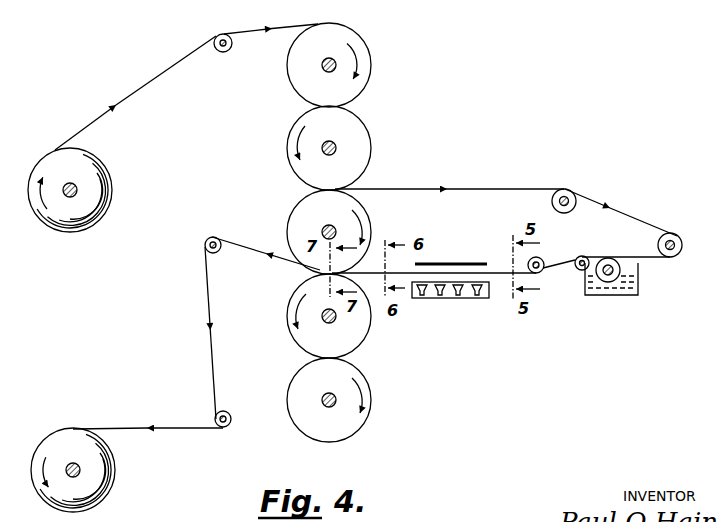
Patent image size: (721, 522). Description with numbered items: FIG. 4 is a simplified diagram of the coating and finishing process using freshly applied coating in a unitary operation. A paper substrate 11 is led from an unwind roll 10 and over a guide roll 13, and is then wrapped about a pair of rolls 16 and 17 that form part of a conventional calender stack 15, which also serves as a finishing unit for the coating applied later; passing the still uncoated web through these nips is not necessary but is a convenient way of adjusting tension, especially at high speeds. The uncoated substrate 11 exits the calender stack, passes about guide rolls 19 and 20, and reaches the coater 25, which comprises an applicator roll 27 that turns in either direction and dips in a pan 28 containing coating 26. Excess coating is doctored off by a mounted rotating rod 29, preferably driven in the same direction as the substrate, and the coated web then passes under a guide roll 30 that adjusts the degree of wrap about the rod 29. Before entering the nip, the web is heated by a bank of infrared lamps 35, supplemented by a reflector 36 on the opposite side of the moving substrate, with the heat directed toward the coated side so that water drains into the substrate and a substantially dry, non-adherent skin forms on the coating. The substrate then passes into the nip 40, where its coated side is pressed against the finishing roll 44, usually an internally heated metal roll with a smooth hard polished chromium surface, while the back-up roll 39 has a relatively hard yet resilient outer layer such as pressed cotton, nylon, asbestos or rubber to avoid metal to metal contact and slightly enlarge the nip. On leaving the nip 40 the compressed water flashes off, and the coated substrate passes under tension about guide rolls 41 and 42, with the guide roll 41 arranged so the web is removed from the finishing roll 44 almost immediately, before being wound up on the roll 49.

The unwind roll 10 is at (106, 168).
The paper substrate 11 is at (139, 87).
The guide roll 13 is at (214, 50).
The calender stack 15 is at (287, 57).
The roll 16 is at (288, 70).
The roll 17 is at (294, 124).
The guide roll 19 is at (564, 189).
The guide roll 20 is at (668, 234).
The coater 25 is at (616, 284).
The coating 26 is at (636, 291).
The applicator roll 27 is at (609, 258).
The pan 28 is at (614, 296).
The rotating rod 29 is at (582, 256).
The guide roll 30 is at (544, 271).
The bank of infrared lamps 35 is at (462, 300).
The reflector 36 is at (467, 262).
The back-up roll 39 is at (363, 207).
The nip 40 is at (348, 271).
The guide roll 41 is at (214, 254).
The guide roll 42 is at (231, 421).
The finishing roll 44 is at (362, 323).
The wind-up roll 49 is at (96, 463).